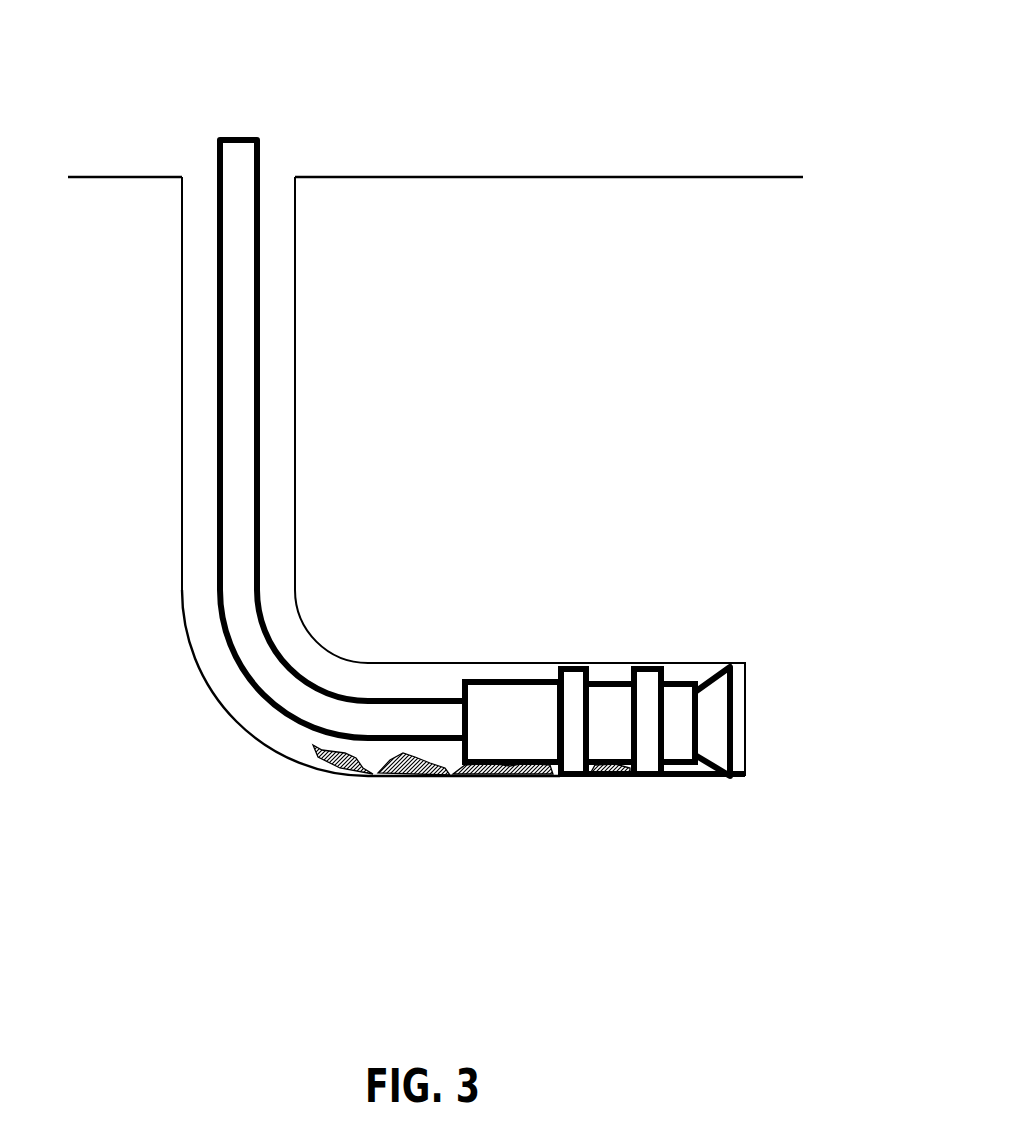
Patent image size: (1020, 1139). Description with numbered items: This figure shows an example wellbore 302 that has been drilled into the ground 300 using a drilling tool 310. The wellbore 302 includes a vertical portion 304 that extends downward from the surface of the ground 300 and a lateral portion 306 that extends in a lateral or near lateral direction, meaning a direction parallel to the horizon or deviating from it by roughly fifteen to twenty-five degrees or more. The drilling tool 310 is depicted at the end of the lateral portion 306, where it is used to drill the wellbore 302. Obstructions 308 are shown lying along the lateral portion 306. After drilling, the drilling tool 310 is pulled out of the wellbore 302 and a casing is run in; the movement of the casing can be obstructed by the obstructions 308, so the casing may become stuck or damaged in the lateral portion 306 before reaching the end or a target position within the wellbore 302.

The ground 300 is at (435, 212).
The wellbore 302 is at (277, 140).
The vertical portion 304 is at (350, 440).
The lateral portion 306 is at (614, 833).
The obstructions 308 is at (570, 779).
The drilling tool 310 is at (614, 720).